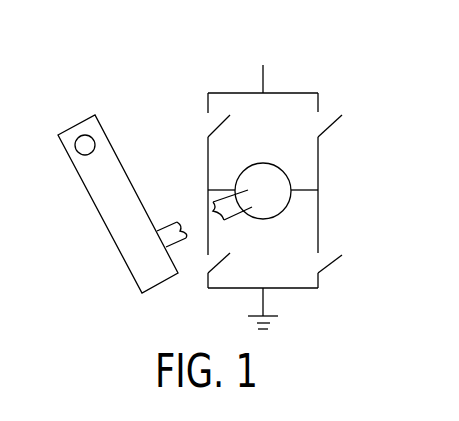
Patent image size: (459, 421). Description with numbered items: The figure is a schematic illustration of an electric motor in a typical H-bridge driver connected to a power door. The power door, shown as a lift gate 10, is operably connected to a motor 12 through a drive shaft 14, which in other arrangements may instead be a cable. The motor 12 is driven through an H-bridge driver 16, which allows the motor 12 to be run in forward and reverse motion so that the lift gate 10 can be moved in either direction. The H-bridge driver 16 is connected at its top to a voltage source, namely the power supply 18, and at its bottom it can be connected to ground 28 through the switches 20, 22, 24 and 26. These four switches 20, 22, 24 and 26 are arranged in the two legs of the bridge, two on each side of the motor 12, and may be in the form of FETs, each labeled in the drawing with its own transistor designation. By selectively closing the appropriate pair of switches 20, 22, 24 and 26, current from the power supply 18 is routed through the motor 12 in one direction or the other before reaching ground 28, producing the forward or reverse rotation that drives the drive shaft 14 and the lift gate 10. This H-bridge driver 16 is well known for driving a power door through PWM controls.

The lift gate 10 is at (105, 198).
The motor 12 is at (263, 165).
The drive shaft 14 is at (168, 223).
The H-bridge driver 16 is at (328, 57).
The power supply 18 is at (278, 30).
The switch 20 is at (202, 108).
The switch 22 is at (210, 261).
The switch 24 is at (330, 108).
The switch 26 is at (330, 248).
The ground 28 is at (285, 320).